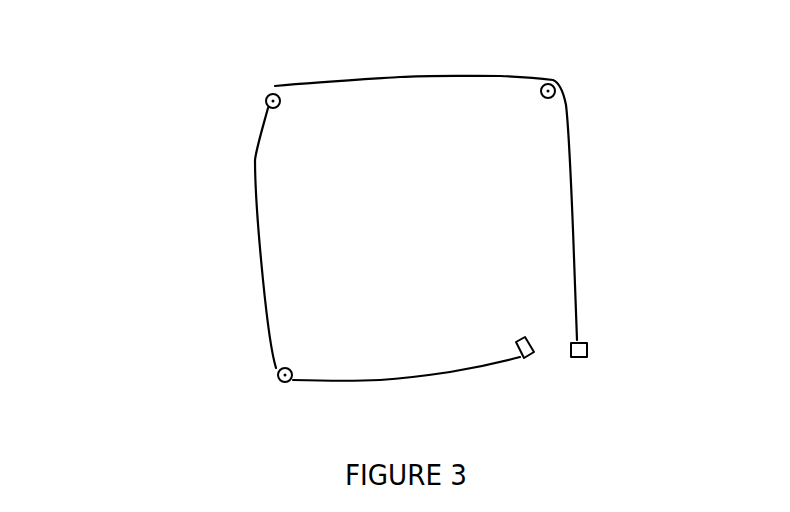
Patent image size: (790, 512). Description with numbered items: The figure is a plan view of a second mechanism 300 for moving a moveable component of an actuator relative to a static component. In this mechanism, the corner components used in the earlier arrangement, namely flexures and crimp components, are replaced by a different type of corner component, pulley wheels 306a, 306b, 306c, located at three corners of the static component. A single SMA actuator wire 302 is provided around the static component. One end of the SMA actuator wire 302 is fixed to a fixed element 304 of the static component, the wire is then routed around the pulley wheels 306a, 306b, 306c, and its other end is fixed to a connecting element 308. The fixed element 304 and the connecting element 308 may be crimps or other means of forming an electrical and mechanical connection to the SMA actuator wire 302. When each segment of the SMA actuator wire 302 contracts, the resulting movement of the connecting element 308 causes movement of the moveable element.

The second mechanism 300 is at (180, 218).
The SMA actuator wire 302 is at (570, 192).
The fixed element 304 is at (584, 343).
The pulley wheel 306a is at (557, 81).
The pulley wheel 306b is at (268, 92).
The pulley wheel 306c is at (282, 383).
The connecting element 308 is at (521, 357).